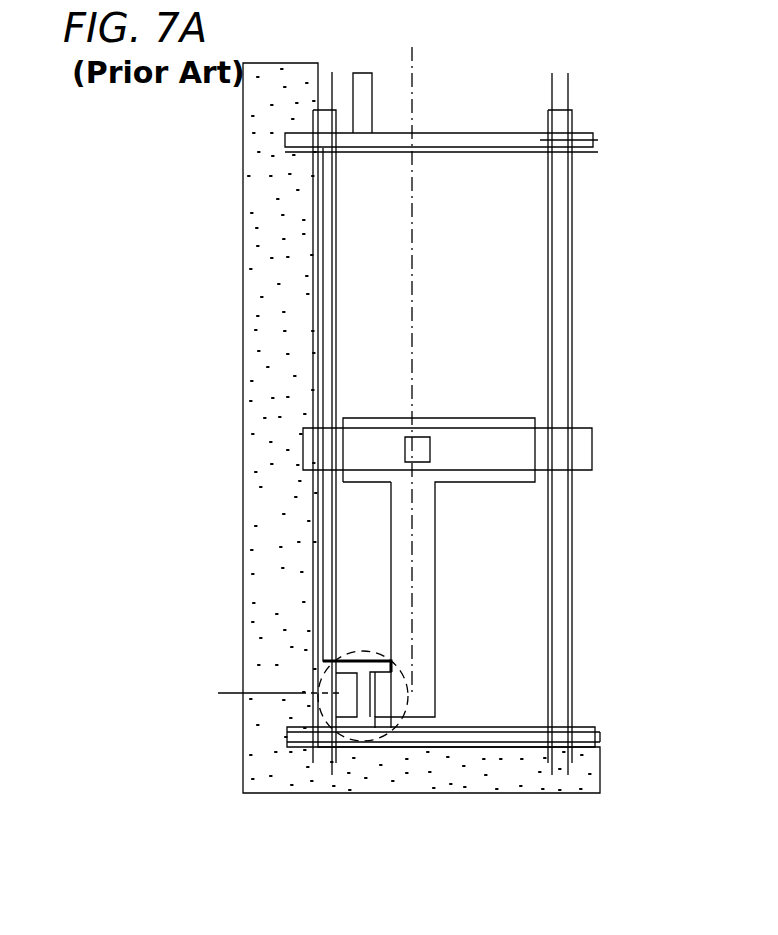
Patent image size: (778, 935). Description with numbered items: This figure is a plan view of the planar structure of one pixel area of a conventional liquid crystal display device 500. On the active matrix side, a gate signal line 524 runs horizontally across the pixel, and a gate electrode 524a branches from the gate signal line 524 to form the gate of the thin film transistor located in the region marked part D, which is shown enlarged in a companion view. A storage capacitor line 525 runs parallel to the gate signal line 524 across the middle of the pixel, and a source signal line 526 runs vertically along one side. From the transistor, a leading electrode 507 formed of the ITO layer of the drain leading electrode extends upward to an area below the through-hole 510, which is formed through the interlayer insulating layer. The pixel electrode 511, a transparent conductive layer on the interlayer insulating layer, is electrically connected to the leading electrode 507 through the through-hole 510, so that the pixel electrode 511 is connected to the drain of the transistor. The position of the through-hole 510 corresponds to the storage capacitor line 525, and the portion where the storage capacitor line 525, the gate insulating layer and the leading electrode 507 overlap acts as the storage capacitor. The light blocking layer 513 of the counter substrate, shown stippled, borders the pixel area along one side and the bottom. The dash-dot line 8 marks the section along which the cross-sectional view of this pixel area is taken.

The liquid crystal display device 500 is at (703, 78).
The leading electrode 507 is at (435, 618).
The through-hole 510 is at (420, 438).
The pixel electrode 511 is at (530, 258).
The light blocking layer 513 is at (245, 193).
The gate signal line 524 is at (583, 733).
The gate electrode 524a is at (367, 98).
The storage capacitor line 525 is at (587, 450).
The source signal line 526 is at (560, 735).
The part D is at (378, 742).
The line 8— 8 is at (310, 364).